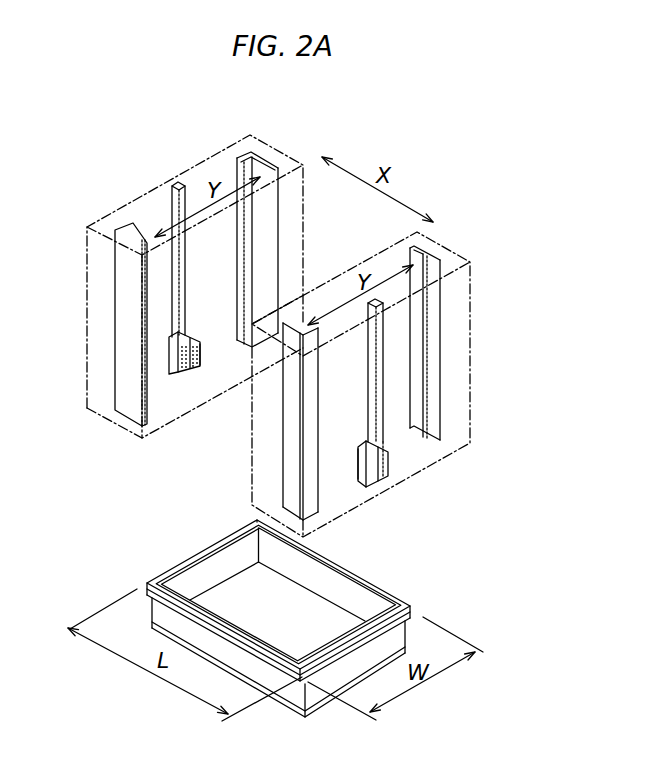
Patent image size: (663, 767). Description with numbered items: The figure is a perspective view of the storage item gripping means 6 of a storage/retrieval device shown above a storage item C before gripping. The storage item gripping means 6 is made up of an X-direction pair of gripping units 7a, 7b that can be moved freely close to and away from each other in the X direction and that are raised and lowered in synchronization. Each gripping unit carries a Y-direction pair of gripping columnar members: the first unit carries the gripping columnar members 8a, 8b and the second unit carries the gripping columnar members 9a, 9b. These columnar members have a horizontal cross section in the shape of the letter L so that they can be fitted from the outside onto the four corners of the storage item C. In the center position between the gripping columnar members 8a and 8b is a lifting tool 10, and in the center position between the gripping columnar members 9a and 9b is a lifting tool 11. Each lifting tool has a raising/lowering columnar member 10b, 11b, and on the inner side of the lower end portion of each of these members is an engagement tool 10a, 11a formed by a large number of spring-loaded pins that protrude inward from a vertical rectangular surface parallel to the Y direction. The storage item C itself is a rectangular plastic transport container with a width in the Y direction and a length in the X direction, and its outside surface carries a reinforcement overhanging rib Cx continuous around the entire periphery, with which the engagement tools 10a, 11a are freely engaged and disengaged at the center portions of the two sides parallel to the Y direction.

The storage item gripping means 6 is at (272, 336).
The gripping unit 7a is at (142, 197).
The gripping unit 7b is at (472, 339).
The gripping columnar member 8a is at (128, 328).
The gripping columnar member 8b is at (266, 259).
The gripping columnar member 9a is at (313, 487).
The gripping columnar member 9b is at (430, 390).
The lifting tool 10 is at (160, 355).
The engagement tool 10a is at (202, 354).
The raising/lowering columnar member 10b is at (177, 275).
The lifting tool 11 is at (395, 460).
The engagement tool 11a is at (355, 460).
The raising/lowering columnar member 11b is at (381, 350).
The storage item C is at (185, 578).
The reinforcement overhanging rib Cx is at (211, 543).